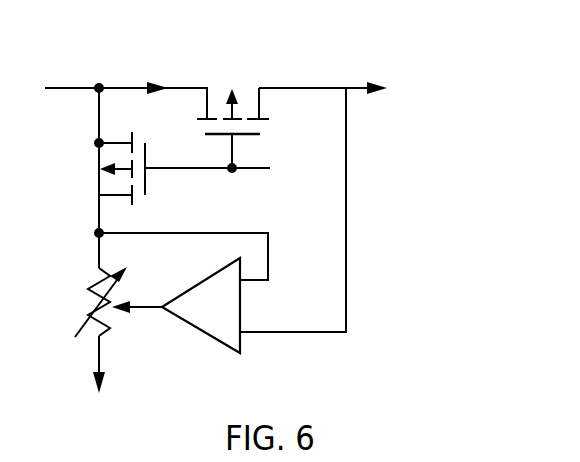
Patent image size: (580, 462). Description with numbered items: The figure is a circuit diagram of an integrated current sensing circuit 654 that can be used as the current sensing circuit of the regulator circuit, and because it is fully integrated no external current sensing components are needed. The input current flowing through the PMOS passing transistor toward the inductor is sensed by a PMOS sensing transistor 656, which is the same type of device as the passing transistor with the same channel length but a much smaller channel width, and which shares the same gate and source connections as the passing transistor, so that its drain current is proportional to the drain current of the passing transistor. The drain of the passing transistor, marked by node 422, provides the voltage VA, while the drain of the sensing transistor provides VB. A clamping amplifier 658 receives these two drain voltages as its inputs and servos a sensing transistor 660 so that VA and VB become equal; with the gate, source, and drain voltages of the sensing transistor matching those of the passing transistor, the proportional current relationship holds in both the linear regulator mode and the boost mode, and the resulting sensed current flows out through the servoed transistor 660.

The integrated current sensing circuit 654 is at (93, 30).
The PMOS sensing transistor MOS 656 is at (114, 142).
The clamping amplifier 658 is at (200, 283).
The transistor M3 660 is at (95, 278).
The output node VA to inductor 422 is at (259, 98).